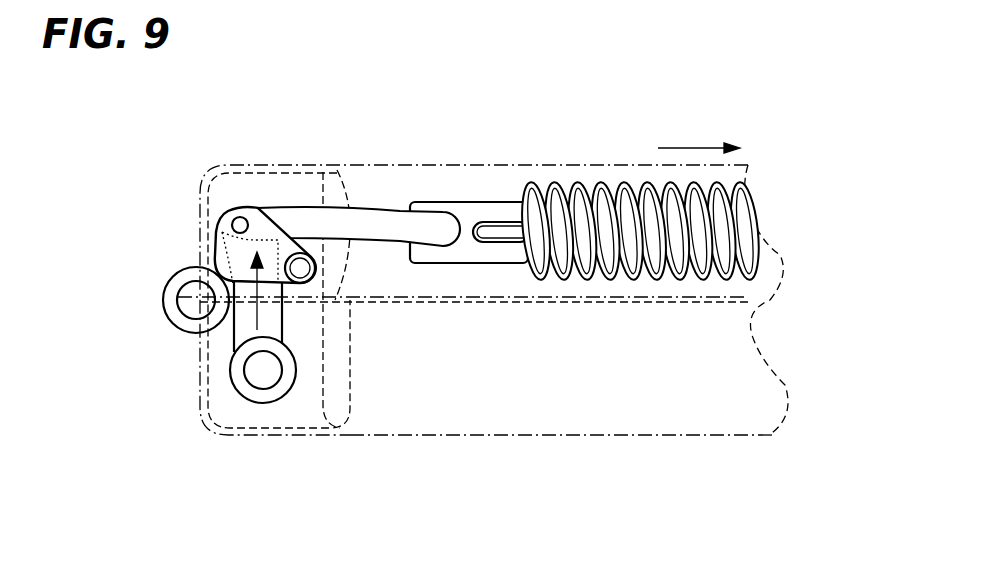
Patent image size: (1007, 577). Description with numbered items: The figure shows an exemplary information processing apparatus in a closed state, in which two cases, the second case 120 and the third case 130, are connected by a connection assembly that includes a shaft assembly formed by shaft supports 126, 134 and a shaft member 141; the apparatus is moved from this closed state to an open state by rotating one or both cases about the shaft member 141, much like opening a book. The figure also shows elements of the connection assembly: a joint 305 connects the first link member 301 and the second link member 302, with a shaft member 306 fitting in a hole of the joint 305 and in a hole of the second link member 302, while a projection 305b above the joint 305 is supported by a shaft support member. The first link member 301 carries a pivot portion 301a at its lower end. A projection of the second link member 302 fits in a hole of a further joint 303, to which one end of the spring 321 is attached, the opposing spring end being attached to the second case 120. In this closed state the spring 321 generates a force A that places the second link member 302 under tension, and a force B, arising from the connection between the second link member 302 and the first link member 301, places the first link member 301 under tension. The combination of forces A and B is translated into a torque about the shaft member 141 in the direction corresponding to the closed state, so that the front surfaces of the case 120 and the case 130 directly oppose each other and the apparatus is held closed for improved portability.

The second case 120 is at (447, 165).
The third case 130 is at (527, 434).
The shaft member 141 is at (183, 283).
The shaft support 126 is at (125, 339).
The shaft support 134 is at (175, 318).
The first link member 301 is at (230, 338).
The lever pivot shaft 301a is at (280, 394).
The second link member 302 is at (368, 209).
The joint 303 is at (485, 210).
The joint 305 is at (258, 210).
The projection 305b is at (314, 276).
The shaft member 306 is at (238, 214).
The spring 321 is at (583, 183).
The force A is at (699, 137).
The force B is at (262, 334).